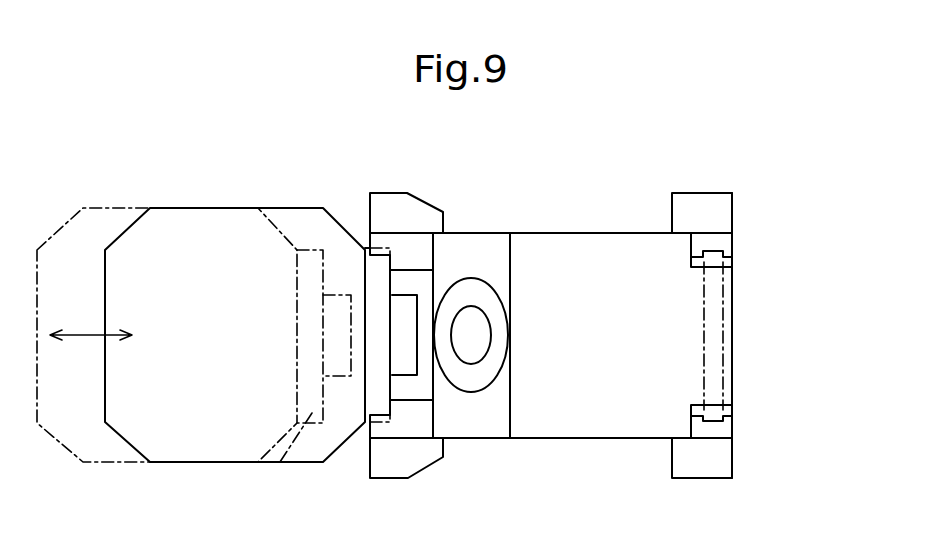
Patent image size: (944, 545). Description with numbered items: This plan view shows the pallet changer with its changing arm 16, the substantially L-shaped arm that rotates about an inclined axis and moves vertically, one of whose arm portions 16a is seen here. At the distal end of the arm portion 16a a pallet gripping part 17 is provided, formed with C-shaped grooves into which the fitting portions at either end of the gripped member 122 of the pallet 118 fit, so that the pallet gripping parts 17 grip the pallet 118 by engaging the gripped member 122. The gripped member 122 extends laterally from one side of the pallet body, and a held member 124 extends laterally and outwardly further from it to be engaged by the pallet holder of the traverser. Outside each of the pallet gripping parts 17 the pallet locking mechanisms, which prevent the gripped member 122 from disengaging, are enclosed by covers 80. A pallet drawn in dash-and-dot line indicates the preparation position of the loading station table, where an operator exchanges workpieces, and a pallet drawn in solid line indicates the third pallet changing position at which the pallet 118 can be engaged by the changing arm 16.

The changing arm 16 is at (470, 427).
The arm portion 16a is at (587, 262).
The pallet gripping parts 17 is at (393, 240).
The covers 80 is at (385, 198).
The pallet 118 is at (187, 238).
The gripped member 122 is at (258, 462).
The held member 124 is at (339, 367).